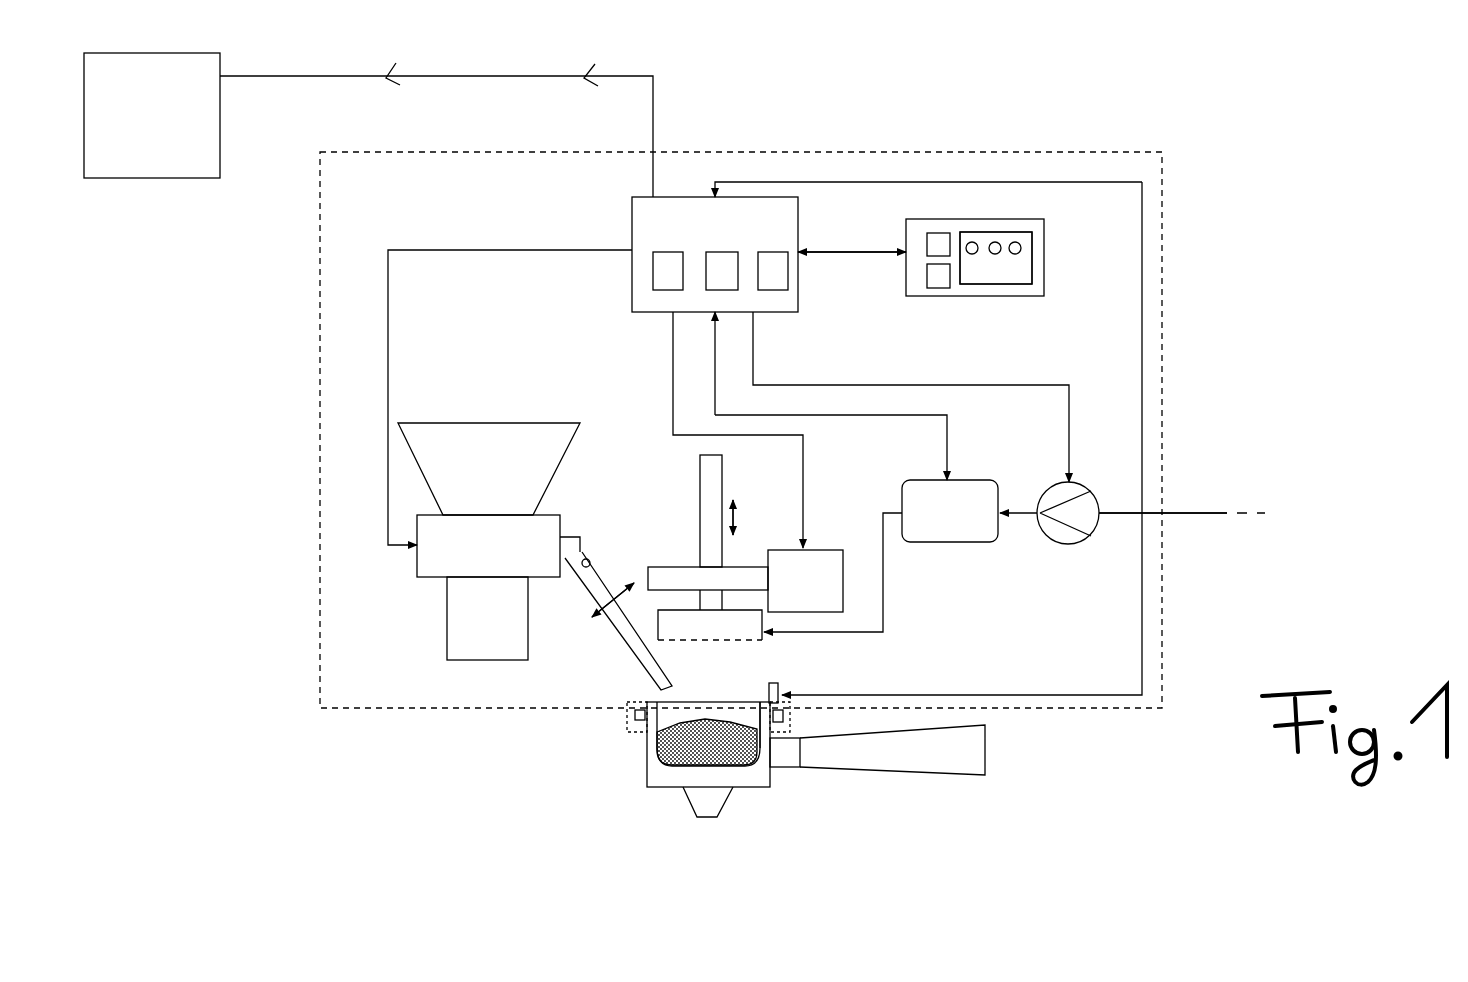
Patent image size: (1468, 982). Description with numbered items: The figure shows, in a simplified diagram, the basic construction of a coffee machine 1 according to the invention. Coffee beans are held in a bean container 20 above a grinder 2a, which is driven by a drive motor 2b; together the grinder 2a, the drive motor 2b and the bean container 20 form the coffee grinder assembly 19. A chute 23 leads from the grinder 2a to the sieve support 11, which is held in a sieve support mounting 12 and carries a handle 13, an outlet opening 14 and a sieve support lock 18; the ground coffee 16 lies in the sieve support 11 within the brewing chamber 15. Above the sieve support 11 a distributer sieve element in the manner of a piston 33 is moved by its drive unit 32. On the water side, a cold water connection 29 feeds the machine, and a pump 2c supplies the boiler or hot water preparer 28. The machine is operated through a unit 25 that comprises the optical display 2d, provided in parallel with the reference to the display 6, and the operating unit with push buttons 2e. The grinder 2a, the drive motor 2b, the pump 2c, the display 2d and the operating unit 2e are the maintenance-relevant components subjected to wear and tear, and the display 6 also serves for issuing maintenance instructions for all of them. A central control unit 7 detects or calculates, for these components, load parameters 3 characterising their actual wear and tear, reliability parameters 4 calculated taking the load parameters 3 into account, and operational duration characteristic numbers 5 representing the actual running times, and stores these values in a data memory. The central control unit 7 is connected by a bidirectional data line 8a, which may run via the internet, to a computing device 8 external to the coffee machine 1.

The coffee machine 1 is at (318, 268).
The grinder 2a is at (435, 556).
The drive motor 2b is at (467, 618).
The pump 2c is at (1069, 545).
The optical display 2d is at (992, 232).
The operating unit with push buttons 2e is at (937, 233).
The load parameters 3 is at (668, 271).
The reliability parameters 4 is at (722, 271).
The operational duration characteristic numbers 5 is at (773, 271).
The display 6 is at (996, 258).
The central control unit 7 is at (679, 197).
The computing device 8 is at (152, 115).
The bidirectional data line 8a is at (302, 86).
The sieve support 11 is at (645, 795).
The sieve support mounting 12 is at (632, 733).
The handle 13 is at (945, 757).
The outlet opening 14 is at (708, 803).
The brewing chamber 15 is at (740, 715).
The ground coffee 16 is at (685, 767).
The sieve support lock 18 is at (787, 705).
The coffee grinder assembly 19 is at (446, 672).
The bean container 20 is at (440, 476).
The chute 23 is at (620, 603).
The unit comprising display and operating unit 25 is at (1044, 255).
The hot water preparer 28 is at (967, 523).
The cold water connection 29 is at (1192, 517).
The drive unit 32 is at (822, 597).
The distributer sieve element 33 is at (678, 607).